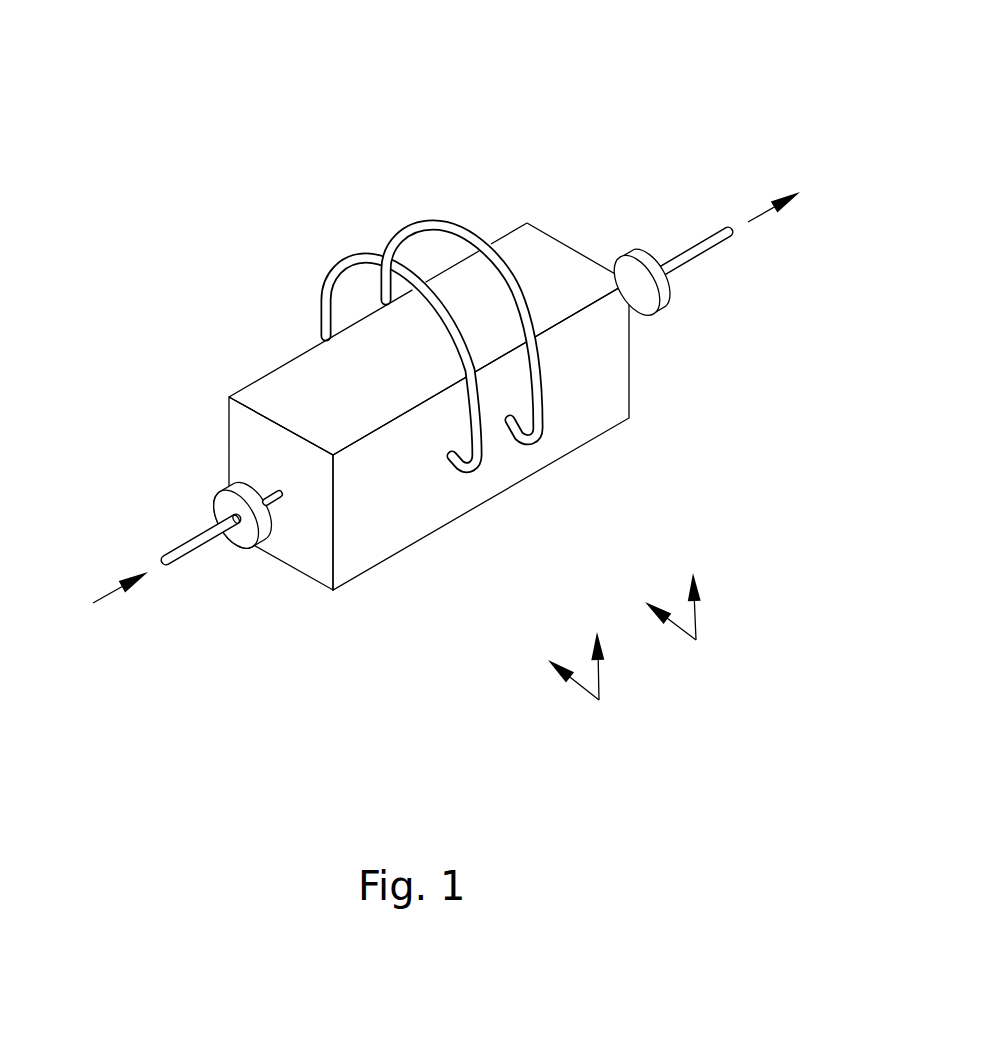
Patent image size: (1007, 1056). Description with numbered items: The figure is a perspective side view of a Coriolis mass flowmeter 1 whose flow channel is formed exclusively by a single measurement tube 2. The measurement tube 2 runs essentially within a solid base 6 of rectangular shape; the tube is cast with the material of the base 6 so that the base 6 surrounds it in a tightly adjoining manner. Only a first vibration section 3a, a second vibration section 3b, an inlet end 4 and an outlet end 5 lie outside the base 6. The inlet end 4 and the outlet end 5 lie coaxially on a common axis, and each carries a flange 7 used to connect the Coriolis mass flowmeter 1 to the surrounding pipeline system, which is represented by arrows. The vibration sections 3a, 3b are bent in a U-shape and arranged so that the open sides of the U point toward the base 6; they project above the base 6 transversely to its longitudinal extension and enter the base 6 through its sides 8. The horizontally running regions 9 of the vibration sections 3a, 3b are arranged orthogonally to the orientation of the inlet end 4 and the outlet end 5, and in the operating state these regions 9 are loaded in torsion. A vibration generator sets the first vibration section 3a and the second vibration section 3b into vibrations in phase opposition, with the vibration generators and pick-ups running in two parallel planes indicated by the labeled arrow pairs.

The Coriolis mass flowmeter 1 is at (313, 165).
The measurement tube 2 is at (370, 355).
The first vibration section 3a is at (431, 220).
The second vibration section 3b is at (352, 260).
The inlet end 4 is at (280, 497).
The outlet end 5 is at (637, 293).
The base 6 is at (507, 453).
The flanges 7 is at (657, 256).
The sides 8 is at (370, 450).
The horizontally running regions 9 is at (462, 460).